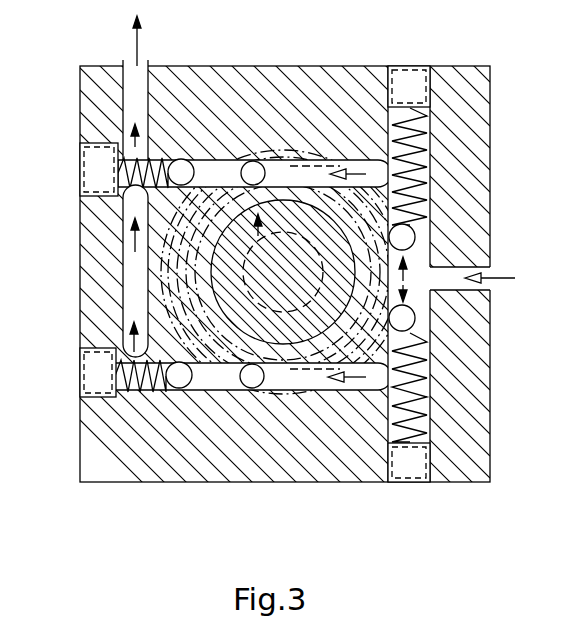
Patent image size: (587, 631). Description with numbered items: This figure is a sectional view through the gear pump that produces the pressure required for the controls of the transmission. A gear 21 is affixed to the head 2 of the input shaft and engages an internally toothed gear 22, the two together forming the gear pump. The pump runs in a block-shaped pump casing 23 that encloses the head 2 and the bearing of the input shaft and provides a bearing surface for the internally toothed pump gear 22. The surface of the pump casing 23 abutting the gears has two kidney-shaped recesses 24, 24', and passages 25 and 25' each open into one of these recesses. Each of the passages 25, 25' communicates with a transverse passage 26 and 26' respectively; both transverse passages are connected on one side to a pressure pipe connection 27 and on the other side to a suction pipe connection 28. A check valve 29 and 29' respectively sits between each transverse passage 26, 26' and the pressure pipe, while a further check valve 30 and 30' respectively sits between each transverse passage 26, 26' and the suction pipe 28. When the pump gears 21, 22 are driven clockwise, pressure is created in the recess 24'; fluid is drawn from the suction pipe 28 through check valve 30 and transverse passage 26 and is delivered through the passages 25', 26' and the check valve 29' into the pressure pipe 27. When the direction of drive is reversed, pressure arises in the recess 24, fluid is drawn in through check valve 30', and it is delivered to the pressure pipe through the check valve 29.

The head of the input shaft 2 is at (232, 267).
The gear 21 is at (215, 335).
The internally toothed gear 22 is at (343, 398).
The pump casing 23 is at (82, 432).
The kidney-shaped recess 24 is at (270, 152).
The kidney-shaped recess 24' is at (245, 399).
The passage 25 is at (320, 147).
The passage 25' is at (305, 402).
The transverse passage 26 is at (255, 154).
The transverse passage 26' is at (253, 397).
The pressure pipe connection 27 is at (143, 73).
The suction pipe connection 28 is at (456, 268).
The check valve 29 is at (183, 152).
The check valve 29' is at (162, 398).
The check valve 30 is at (428, 220).
The check valve 30' is at (435, 319).